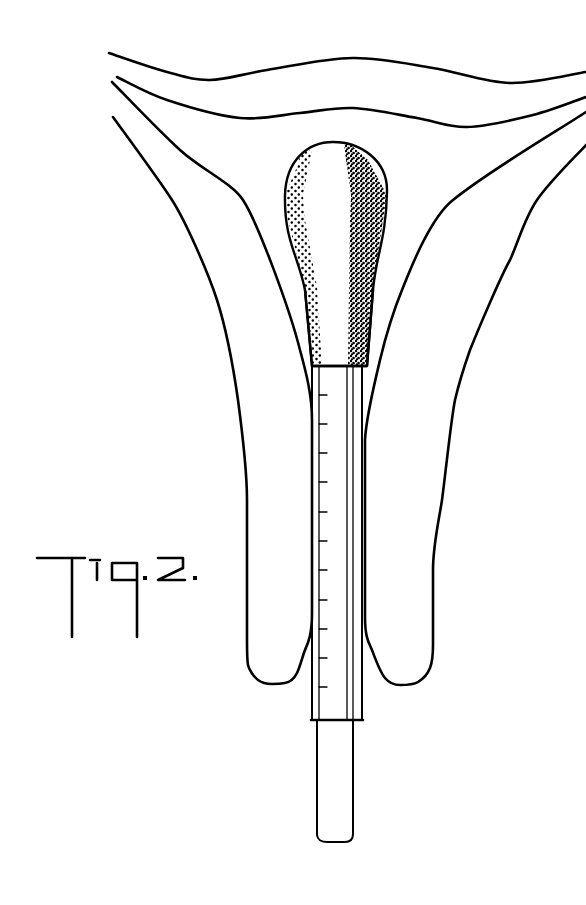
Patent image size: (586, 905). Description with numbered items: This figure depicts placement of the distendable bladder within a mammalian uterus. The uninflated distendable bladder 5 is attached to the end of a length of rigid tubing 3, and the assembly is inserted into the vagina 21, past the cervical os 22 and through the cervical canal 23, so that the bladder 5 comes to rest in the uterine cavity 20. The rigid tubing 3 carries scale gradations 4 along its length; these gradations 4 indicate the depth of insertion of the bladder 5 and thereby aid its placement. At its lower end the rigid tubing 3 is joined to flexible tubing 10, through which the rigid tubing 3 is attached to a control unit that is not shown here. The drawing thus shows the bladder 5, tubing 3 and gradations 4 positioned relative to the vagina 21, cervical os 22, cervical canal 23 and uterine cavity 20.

The rigid tubing 3 is at (355, 427).
The scale gradations 4 is at (320, 488).
The distendable bladder 5 is at (387, 203).
The flexible tubing 10 is at (342, 785).
The uterine cavity 20 is at (375, 330).
The vagina 21 is at (368, 668).
The cervical os 22 is at (363, 600).
The cervical canal 23 is at (363, 525).